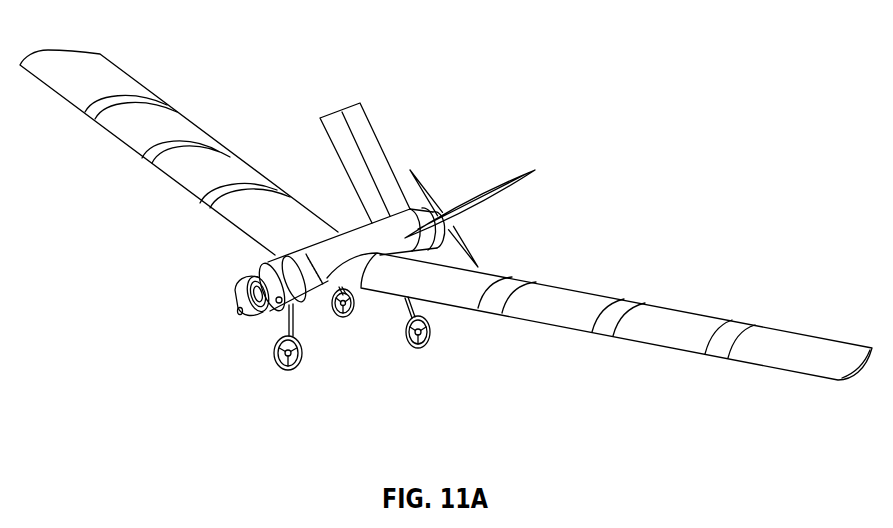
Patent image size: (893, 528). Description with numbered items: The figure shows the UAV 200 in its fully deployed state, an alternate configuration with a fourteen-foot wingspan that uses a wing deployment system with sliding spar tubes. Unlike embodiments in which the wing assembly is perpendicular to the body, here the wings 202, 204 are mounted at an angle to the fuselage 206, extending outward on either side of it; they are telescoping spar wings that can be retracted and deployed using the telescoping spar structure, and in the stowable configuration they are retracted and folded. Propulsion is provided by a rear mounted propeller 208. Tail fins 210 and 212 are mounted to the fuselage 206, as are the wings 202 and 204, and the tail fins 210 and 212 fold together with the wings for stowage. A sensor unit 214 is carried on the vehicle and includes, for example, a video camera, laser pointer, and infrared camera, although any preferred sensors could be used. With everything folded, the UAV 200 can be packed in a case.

The UAV 200 is at (695, 52).
The wing 202 is at (562, 312).
The wing 204 is at (193, 173).
The fuselage 206 is at (360, 247).
The propeller 208 is at (427, 188).
The tail fin 210 is at (368, 142).
The tail fin 212 is at (478, 202).
The sensor unit 214 is at (236, 299).